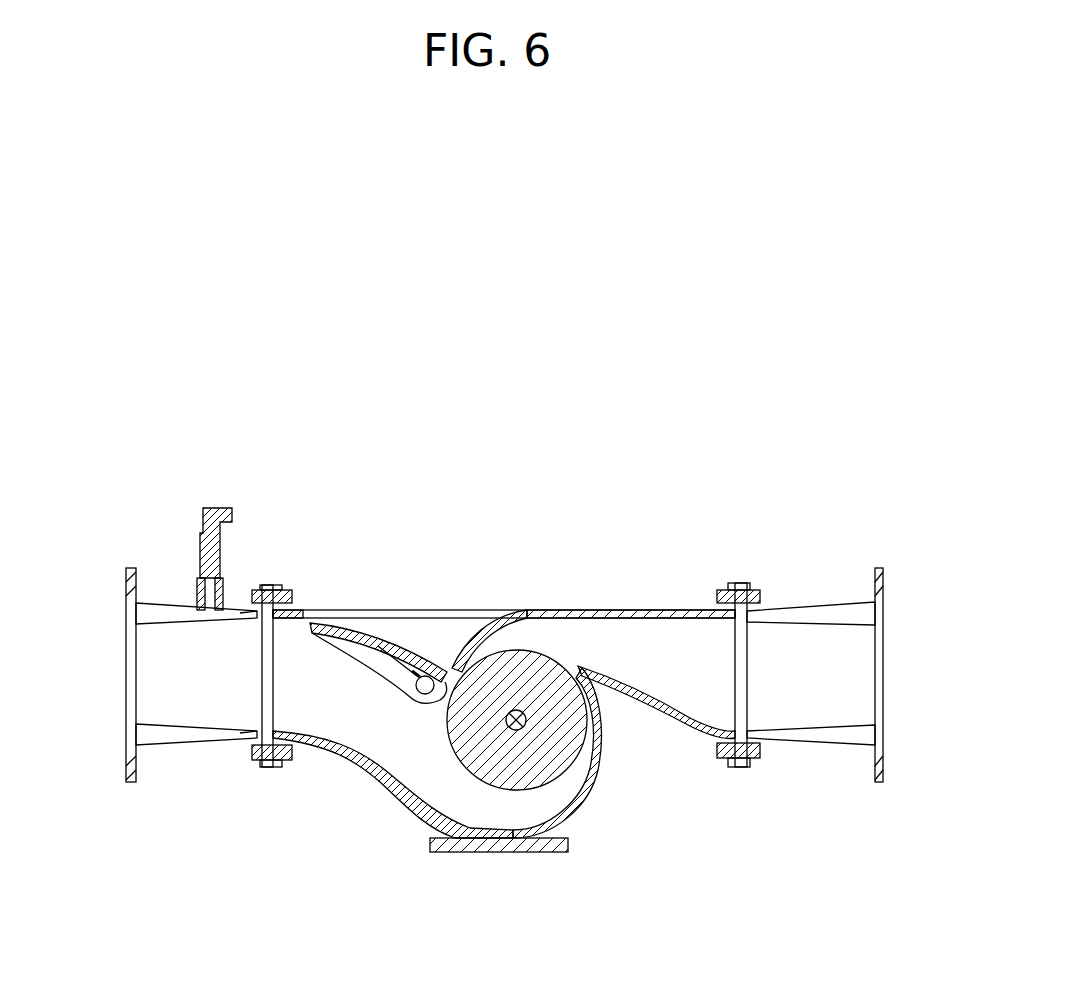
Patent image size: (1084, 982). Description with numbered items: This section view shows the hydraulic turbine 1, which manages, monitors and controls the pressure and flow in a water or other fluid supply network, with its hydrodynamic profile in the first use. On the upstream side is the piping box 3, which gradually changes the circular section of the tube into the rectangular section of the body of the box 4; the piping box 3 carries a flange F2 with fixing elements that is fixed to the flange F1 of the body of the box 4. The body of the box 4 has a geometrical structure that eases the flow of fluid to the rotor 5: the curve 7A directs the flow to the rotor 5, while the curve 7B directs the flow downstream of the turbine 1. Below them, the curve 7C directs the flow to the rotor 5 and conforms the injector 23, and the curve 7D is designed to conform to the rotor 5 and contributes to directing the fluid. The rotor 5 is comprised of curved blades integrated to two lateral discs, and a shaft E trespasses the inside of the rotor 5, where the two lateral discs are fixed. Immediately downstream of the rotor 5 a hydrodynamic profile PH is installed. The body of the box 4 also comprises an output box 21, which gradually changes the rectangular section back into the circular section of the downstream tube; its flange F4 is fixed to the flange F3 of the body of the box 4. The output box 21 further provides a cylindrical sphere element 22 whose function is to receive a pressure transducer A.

The turbine 1 is at (290, 302).
The body of the box 4 is at (576, 493).
The pressure transducer A is at (207, 560).
The cylindrical sphere element 22 is at (198, 590).
The hydrodynamic profile PH is at (372, 640).
The curve 7B is at (392, 632).
The curve 7A is at (474, 633).
The flange F1 is at (738, 585).
The flange F2 is at (752, 585).
The output box 21 is at (170, 673).
The piping box 3 is at (817, 676).
The flange F4 is at (262, 765).
The flange F3 is at (272, 765).
The curve 7D is at (380, 775).
The rotor 5 is at (502, 758).
The shaft E is at (519, 723).
The curve 7C is at (625, 700).
The injector 23 is at (675, 667).